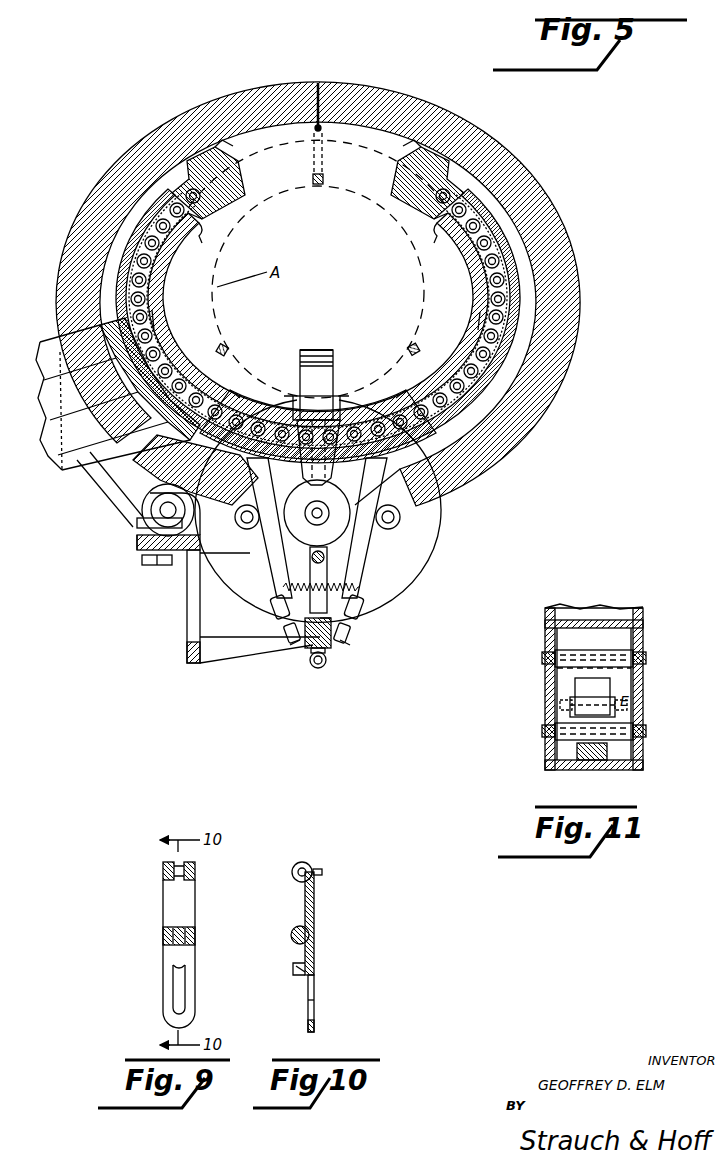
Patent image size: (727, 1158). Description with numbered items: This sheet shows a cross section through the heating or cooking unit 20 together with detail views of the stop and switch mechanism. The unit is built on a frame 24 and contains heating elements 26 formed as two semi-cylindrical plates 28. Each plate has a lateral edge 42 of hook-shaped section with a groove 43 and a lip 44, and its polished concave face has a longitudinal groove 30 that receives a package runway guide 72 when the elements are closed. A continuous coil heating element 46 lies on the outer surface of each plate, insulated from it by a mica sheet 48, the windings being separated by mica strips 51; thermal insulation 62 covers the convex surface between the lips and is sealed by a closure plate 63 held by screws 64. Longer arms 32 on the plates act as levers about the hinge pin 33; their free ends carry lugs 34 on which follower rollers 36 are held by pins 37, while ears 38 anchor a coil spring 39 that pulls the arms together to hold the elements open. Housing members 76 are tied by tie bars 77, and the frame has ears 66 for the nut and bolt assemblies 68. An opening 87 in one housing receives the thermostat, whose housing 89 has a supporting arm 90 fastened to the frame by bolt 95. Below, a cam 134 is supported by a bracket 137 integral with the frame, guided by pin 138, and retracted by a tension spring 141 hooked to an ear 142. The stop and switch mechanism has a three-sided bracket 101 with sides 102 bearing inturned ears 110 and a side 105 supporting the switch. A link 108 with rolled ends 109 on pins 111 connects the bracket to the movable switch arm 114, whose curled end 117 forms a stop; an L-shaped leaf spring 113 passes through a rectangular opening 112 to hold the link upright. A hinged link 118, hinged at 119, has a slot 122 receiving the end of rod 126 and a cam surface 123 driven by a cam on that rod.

In FIG. 5, the heating or cooking unit 20 is at (112, 540).
In FIG. 5, the frame 24 is at (186, 573).
In FIG. 5, the heating elements 26 is at (128, 218).
In FIG. 5, the plates 28 is at (230, 163).
In FIG. 5, the longitudinal groove 30 is at (196, 380).
In FIG. 5, the longer arms 32 is at (275, 568).
In FIG. 5, the hinge pin 33 is at (325, 518).
In FIG. 5, the lugs 34 is at (274, 608).
In FIG. 5, the follower rollers 36 is at (285, 632).
In FIG. 5, the pins 37 is at (291, 645).
In FIG. 5, the ears 38 is at (283, 587).
In FIG. 5, the coil spring 39 is at (338, 590).
In FIG. 5, the edge 42 is at (284, 396).
In FIG. 5, the groove 43 is at (214, 181).
In FIG. 5, the lip 44 is at (190, 145).
In FIG. 5, the continuous coil heating element 46 is at (151, 255).
In FIG. 5, the mica sheet 48 is at (200, 215).
In FIG. 5, the mica strips 51 is at (153, 312).
In FIG. 5, the thermal insulation 62 is at (122, 240).
In FIG. 5, the closure plate 63 is at (115, 260).
In FIG. 5, the screws 64 is at (222, 148).
In FIG. 5, the ears 66 is at (201, 530).
In FIG. 5, the nut and bolt assemblies 68 is at (137, 522).
In FIG. 5, the package runway guides 72 is at (316, 186).
In FIG. 5, the housing members 76 is at (121, 152).
In FIG. 5, the tie bars 77 is at (316, 128).
In FIG. 5, the opening 87 is at (88, 300).
In FIG. 5, the thermostat housing 89 is at (72, 452).
In FIG. 5, the supporting arm 90 is at (105, 490).
In FIG. 5, the bolt 95 is at (145, 565).
In FIG. 11, the bracket 101 is at (543, 757).
In FIG. 11, the sides 102 is at (548, 742).
In FIG. 11, the side 105 is at (625, 770).
In FIG. 11, the link 108 is at (566, 668).
In FIG. 11, the rolled ends 109 is at (630, 652).
In FIG. 11, the inturned ears 110 is at (560, 712).
In FIG. 11, the pins 111 is at (646, 657).
In FIG. 11, the rectangular opening 112 is at (572, 698).
In FIG. 11, the leaf spring 113 is at (611, 690).
In FIG. 5, the movable switch arm 114 is at (335, 372).
In FIG. 11, the movable switch arm 114 is at (548, 626).
In FIG. 5, the curled end 117 is at (316, 350).
In FIG. 9, the hinged link 118 is at (196, 900).
In FIG. 10, the hinged link 118 is at (305, 900).
In FIG. 9, the hinge 119 is at (196, 933).
In FIG. 10, the hinge 119 is at (300, 935).
In FIG. 9, the slot 122 is at (180, 1003).
In FIG. 10, the slot 122 is at (308, 1002).
In FIG. 9, the cam surface 123 is at (186, 972).
In FIG. 10, the cam surface 123 is at (293, 970).
In FIG. 5, the rod 126 is at (312, 557).
In FIG. 5, the cam 134 is at (332, 648).
In FIG. 5, the bracket 137 is at (228, 665).
In FIG. 5, the pin 138 is at (335, 620).
In FIG. 5, the tension spring 141 is at (319, 670).
In FIG. 5, the ear 142 is at (311, 660).